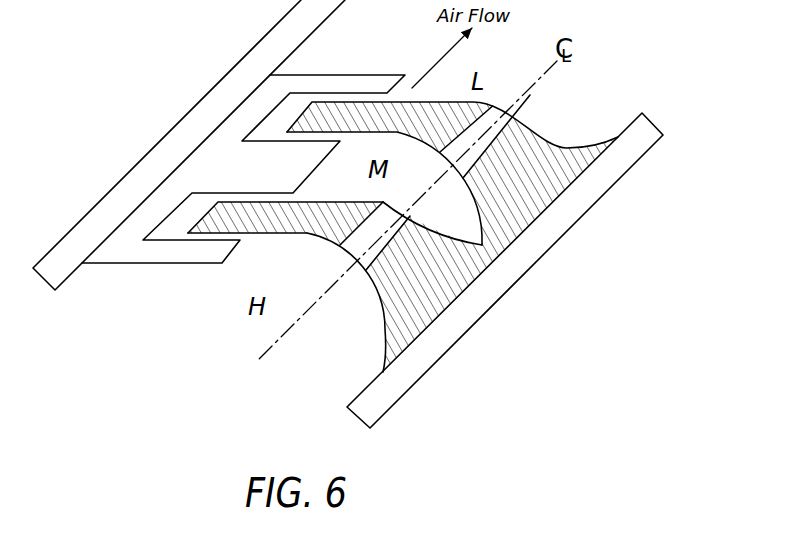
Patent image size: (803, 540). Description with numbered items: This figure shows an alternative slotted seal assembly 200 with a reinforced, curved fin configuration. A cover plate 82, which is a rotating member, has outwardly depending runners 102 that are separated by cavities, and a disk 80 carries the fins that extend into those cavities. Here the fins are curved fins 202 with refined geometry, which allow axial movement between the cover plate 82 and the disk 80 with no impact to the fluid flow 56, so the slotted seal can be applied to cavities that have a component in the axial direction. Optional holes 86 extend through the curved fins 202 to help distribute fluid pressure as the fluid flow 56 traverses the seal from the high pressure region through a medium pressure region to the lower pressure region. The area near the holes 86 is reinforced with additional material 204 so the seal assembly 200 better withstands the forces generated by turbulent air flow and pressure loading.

The disk 80 is at (585, 200).
The cover plate 82 is at (190, 125).
The runners 102 is at (271, 180).
The apertures 86 is at (497, 104).
The seal assembly 200 is at (230, 420).
The curved fins 202 is at (385, 325).
The additional material 204 is at (483, 122).
The fluid flow 56 is at (232, 283).